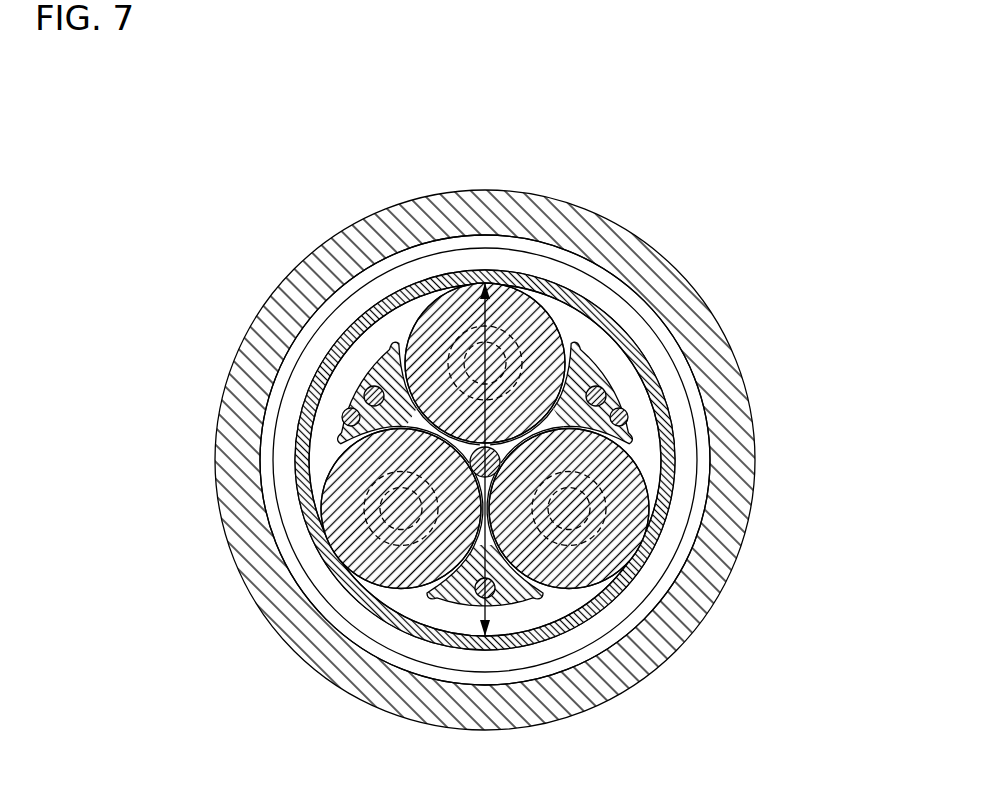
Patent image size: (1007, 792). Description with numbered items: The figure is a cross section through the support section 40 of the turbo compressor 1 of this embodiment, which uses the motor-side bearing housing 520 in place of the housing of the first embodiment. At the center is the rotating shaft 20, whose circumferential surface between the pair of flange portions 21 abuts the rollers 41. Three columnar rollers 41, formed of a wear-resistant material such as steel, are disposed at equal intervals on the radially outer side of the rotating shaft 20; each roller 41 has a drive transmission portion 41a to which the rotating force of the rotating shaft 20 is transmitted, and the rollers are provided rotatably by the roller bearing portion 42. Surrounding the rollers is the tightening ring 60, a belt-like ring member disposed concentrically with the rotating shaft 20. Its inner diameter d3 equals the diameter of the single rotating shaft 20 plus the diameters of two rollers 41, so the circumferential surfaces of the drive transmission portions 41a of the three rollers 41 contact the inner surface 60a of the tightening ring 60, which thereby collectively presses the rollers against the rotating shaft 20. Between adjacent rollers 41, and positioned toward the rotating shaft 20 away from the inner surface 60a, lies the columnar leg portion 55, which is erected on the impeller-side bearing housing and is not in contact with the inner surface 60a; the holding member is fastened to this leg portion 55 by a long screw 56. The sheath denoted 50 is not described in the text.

The turbo compressor 1 is at (640, 115).
The sheath 50 is at (490, 434).
The motor-side bearing housing 520 is at (562, 227).
The support section 40 is at (590, 293).
The rotating shaft 20 is at (603, 597).
The tightening ring 60 is at (668, 485).
The inner surface of tightening ring 60a is at (650, 437).
The roller 41 is at (465, 287).
The drive transmission portion 41a is at (412, 352).
The roller bearing portion 42 is at (445, 350).
The flange portion 21 is at (397, 423).
The leg portion 55 is at (387, 370).
The long screw 56 is at (405, 395).
The inner diameter of tightening ring d3 is at (483, 512).